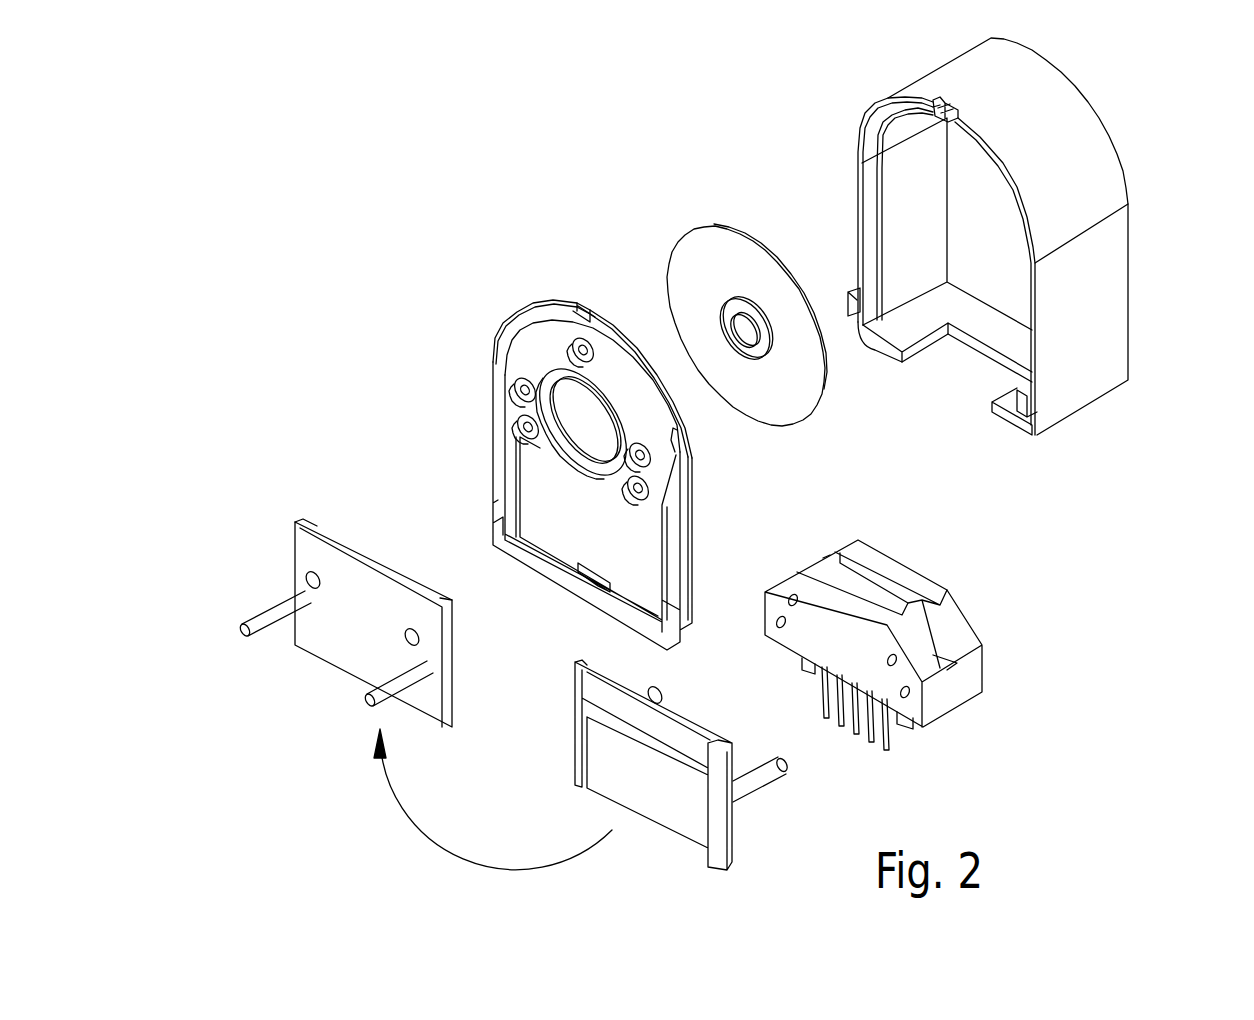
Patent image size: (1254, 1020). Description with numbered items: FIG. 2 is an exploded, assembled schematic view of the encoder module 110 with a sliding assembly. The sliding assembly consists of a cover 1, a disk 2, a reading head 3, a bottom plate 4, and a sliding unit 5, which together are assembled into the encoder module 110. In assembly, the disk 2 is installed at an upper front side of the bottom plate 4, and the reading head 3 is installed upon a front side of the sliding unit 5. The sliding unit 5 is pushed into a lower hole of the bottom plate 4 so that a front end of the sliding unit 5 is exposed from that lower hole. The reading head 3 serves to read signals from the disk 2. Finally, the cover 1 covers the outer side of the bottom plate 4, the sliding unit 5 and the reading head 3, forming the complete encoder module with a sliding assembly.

The optical encoder module 110 is at (210, 232).
The cover 1 is at (1102, 293).
The disk 2 is at (702, 257).
The reading head 3 is at (955, 690).
The bottom plate 4 is at (497, 420).
The sliding unit 5 is at (343, 643).